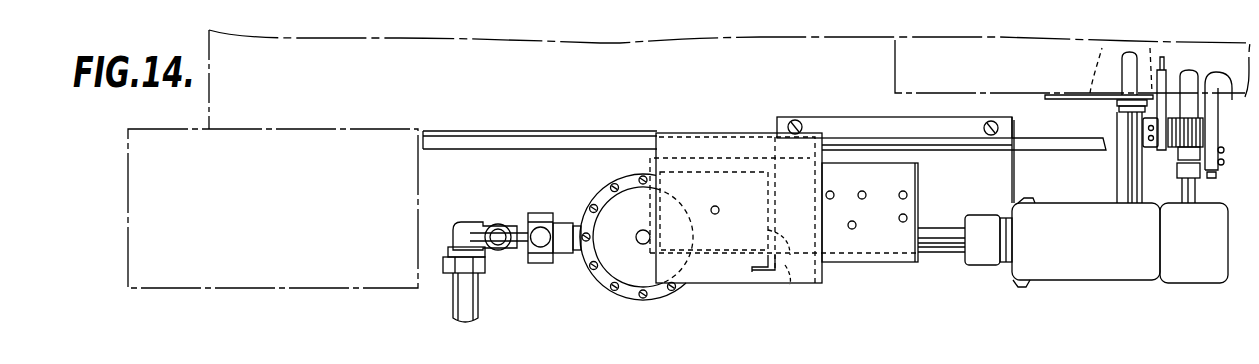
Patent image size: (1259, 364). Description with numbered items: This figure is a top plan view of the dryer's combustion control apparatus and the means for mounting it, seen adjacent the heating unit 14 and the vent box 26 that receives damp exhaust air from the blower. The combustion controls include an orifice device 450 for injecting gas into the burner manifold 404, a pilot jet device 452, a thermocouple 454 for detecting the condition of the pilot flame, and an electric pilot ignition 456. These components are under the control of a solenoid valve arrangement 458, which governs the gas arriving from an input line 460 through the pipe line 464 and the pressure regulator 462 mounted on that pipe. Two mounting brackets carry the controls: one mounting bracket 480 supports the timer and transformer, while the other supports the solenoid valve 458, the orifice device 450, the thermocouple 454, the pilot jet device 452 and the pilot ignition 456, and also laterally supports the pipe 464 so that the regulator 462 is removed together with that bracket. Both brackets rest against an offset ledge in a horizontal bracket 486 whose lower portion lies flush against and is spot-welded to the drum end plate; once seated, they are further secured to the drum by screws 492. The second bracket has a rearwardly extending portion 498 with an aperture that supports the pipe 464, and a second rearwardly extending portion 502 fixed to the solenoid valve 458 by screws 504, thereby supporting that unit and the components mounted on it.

The heating unit 14 is at (893, 80).
The vent box 26 is at (135, 215).
The manifold 404 is at (1097, 58).
The orifice device 450 is at (1125, 70).
The pilot jet device 452 is at (1212, 118).
The thermocouple 454 is at (1168, 70).
The electric pilot ignition 456 is at (1215, 125).
The solenoid valve arrangement 458 is at (1136, 282).
The input line 460 is at (470, 310).
The pressure regulator 462 is at (505, 222).
The pipe line 464 is at (950, 255).
The mounting bracket 480 is at (727, 133).
The horizontal bracket 486 is at (567, 145).
The screws 492 is at (798, 121).
The rearwardly extending portion 498 is at (787, 265).
The second rearwardly extending portion 502 is at (1013, 192).
The screws 504 is at (1025, 203).